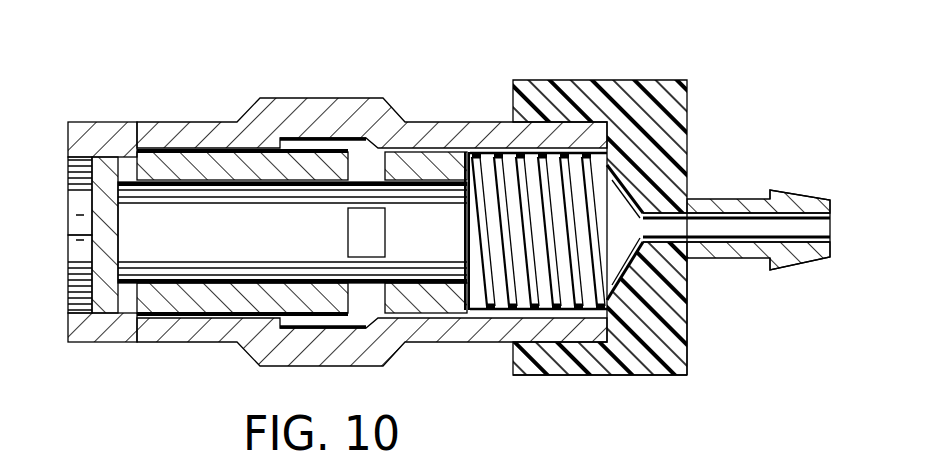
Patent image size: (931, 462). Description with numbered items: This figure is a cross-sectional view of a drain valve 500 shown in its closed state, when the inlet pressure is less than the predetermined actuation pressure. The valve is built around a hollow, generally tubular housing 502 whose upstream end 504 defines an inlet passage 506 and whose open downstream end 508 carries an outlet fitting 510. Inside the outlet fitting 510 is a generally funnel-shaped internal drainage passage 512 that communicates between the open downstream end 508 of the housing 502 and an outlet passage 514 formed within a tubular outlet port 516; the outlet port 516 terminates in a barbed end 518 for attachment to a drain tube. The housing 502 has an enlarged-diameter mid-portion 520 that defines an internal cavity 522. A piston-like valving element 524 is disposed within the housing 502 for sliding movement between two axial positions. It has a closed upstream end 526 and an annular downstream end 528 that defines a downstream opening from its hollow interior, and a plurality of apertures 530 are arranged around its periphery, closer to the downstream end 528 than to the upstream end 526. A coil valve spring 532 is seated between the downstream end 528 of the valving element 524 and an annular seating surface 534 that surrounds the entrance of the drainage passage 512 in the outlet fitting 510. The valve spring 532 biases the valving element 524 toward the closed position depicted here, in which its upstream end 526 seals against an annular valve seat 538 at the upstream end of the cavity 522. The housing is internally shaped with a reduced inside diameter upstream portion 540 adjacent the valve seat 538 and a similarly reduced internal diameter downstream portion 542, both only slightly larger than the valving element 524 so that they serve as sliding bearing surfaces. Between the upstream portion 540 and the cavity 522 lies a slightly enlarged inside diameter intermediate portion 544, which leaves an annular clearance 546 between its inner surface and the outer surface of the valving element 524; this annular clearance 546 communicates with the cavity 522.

The drain valve 500 is at (212, 84).
The housing 502 is at (427, 122).
The upstream end 504 is at (72, 134).
The inlet passage 506 is at (72, 296).
The open downstream end 508 is at (612, 372).
The outlet fitting 510 is at (617, 80).
The internal drainage passage 512 is at (688, 270).
The outlet passage 514 is at (828, 222).
The tubular outlet port 516 is at (745, 260).
The barbed end 518 is at (778, 195).
The enlarged-diameter mid-portion 520 is at (290, 106).
The internal cavity 522 is at (333, 150).
The valving element 524 is at (150, 160).
The closed upstream end 526 is at (92, 233).
The annular downstream end 528 is at (472, 312).
The apertures 530 is at (354, 297).
The coil valve spring 532 is at (478, 152).
The annular seating surface 534 is at (604, 170).
The annular valve seat 538 is at (105, 150).
The reduced inside diameter upstream portion 540 is at (124, 318).
The reduced internal diameter downstream portion 542 is at (414, 300).
The intermediate portion 544 is at (213, 318).
The annular clearance 546 is at (205, 158).